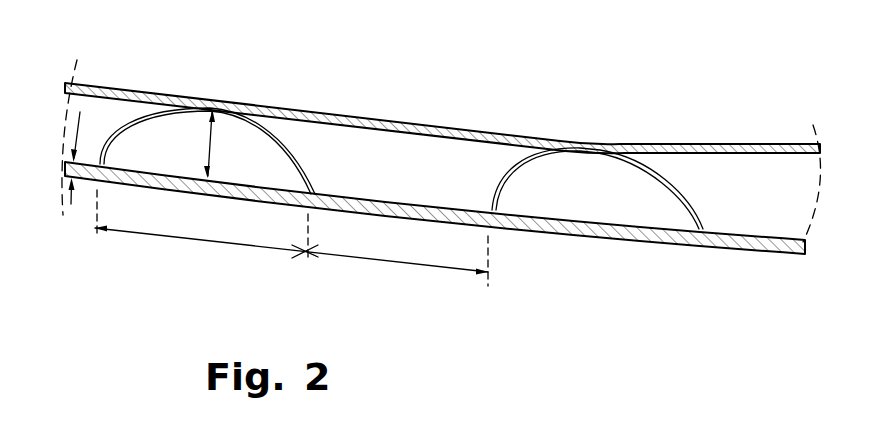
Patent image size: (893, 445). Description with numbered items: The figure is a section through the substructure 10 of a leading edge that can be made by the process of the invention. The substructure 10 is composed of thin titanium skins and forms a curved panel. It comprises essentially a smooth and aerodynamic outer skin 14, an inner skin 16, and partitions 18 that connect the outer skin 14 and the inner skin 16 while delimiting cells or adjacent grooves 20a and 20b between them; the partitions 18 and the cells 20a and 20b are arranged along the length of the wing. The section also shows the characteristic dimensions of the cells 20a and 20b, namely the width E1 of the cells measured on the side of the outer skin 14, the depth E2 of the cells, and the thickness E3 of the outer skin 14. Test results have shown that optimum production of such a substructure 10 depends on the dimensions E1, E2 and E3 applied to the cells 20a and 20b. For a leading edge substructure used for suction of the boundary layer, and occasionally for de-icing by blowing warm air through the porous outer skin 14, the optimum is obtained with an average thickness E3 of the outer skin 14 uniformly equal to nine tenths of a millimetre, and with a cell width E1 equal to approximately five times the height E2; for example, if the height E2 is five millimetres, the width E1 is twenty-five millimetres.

The substructure 10 is at (748, 258).
The outer skin 14 is at (673, 247).
The inner skin 16 is at (452, 125).
The partitions 18 is at (647, 162).
The cells 20a is at (245, 142).
The cells 20b is at (103, 112).
The width of the cells E1 is at (197, 240).
The depth of the cells E2 is at (207, 142).
The thickness of the outer skin E3 is at (71, 204).